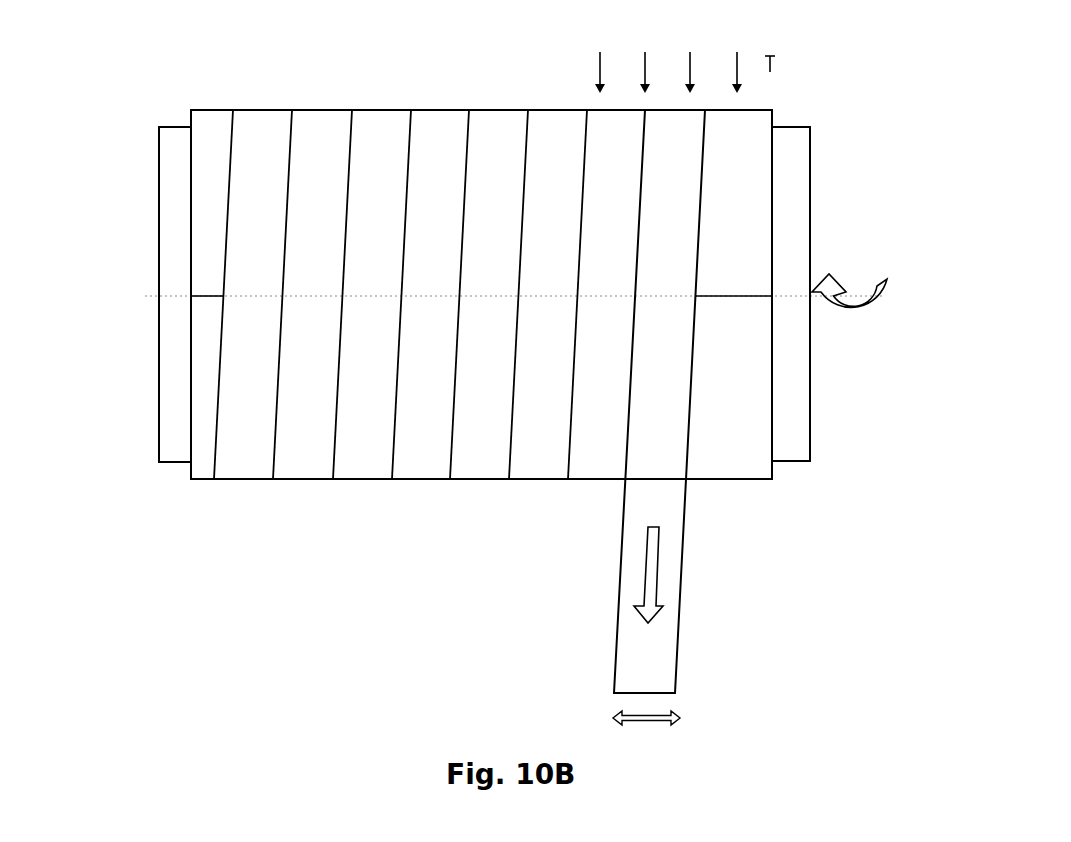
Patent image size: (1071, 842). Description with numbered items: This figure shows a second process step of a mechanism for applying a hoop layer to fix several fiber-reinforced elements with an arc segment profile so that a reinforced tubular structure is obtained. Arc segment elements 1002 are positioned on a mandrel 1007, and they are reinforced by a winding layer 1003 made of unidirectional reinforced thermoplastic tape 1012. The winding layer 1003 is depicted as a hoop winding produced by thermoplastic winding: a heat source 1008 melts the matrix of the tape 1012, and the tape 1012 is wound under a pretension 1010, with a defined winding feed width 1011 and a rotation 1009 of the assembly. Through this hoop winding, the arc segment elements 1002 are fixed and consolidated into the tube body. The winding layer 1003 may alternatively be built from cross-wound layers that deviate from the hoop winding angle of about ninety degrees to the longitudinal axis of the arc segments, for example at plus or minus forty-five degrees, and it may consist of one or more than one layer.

The arc segment elements 1002 is at (762, 217).
The winding layer 1003 is at (250, 452).
The mandrel 1007 is at (174, 414).
The heat source 1008 is at (816, 62).
The rotation 1009 is at (873, 356).
The pretension 1010 is at (672, 570).
The winding feed width 1011 is at (707, 717).
The unidirectional reinforced thermoplastic tape 1012 is at (647, 495).